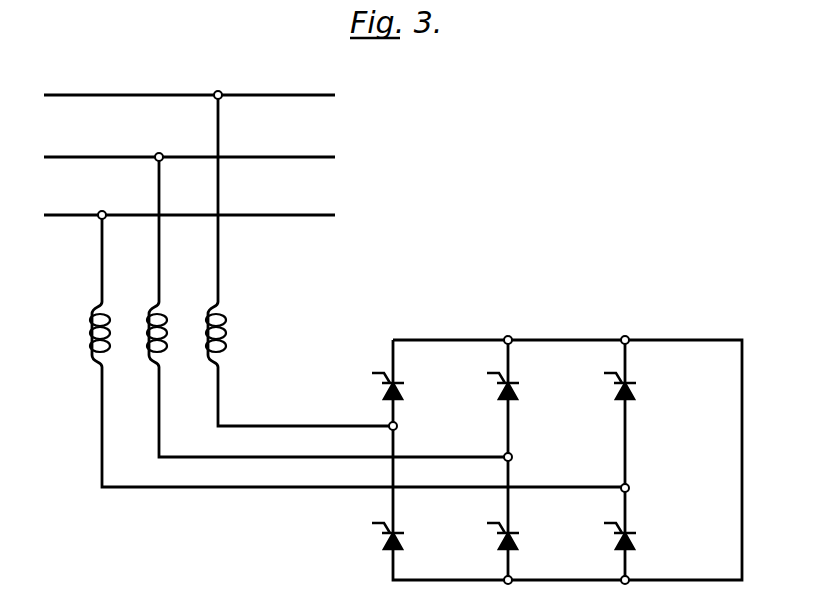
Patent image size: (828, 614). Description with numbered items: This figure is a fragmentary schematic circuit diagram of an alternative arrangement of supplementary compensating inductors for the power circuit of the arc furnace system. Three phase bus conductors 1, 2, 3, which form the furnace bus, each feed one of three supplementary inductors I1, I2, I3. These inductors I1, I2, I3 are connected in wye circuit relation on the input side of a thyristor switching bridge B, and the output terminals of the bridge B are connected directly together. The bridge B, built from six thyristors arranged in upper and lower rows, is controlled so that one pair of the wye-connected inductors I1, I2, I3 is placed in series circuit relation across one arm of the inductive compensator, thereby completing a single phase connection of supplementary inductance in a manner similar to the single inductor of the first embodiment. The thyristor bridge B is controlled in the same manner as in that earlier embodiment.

The bus conductor 1 is at (273, 95).
The bus conductor 2 is at (273, 157).
The bus conductor 3 is at (273, 215).
The supplementary inductor I1 is at (345, 349).
The supplementary inductor I2 is at (315, 305).
The supplementary inductor I3 is at (287, 258).
The thyristor switching bridge B is at (556, 470).